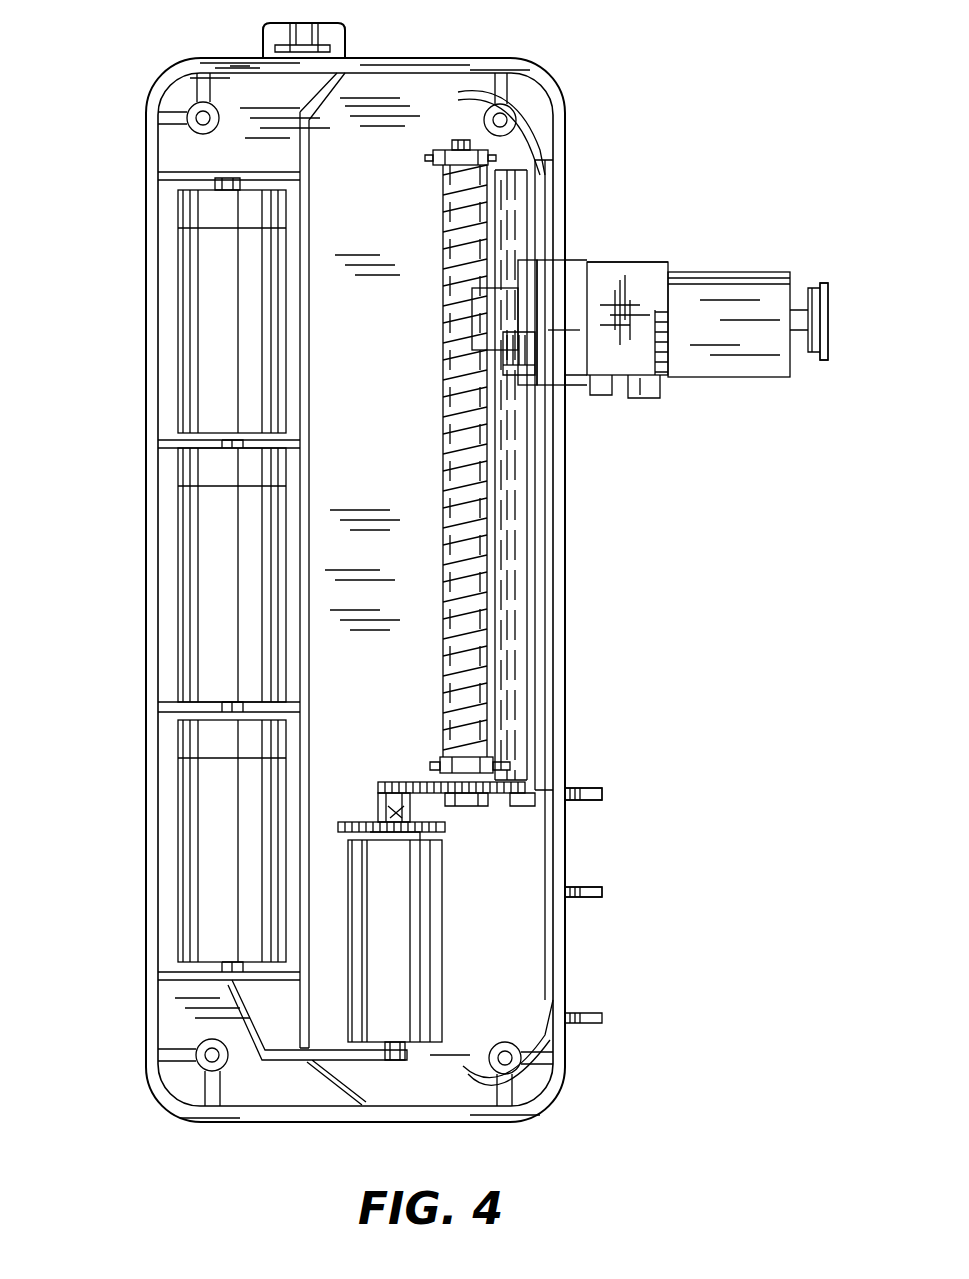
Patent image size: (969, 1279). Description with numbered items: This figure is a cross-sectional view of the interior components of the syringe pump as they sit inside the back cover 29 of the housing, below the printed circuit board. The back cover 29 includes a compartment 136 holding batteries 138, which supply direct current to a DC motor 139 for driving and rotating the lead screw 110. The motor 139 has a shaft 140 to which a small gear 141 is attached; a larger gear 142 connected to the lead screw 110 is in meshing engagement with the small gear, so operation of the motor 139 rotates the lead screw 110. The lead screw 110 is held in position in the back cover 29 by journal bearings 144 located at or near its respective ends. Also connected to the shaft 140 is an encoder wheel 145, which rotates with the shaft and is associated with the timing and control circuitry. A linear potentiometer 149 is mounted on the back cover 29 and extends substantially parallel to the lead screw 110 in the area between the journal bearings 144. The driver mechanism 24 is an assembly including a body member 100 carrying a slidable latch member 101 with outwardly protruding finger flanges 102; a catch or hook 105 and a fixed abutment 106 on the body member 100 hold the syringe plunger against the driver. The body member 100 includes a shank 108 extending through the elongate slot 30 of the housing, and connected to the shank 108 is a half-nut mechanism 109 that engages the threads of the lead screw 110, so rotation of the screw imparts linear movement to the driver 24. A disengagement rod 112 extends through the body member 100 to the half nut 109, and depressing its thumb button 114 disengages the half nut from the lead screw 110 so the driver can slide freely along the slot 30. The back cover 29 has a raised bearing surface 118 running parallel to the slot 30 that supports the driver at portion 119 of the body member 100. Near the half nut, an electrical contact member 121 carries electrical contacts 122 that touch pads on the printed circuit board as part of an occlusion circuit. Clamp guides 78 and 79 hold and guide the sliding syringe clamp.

The driver mechanism 24 is at (655, 262).
The back cover 29 is at (485, 60).
The elongate slot 30 is at (570, 605).
The clamp guide 78 is at (590, 900).
The clamp guide 79 is at (598, 790).
The body member 100 is at (705, 275).
The latch member 101 is at (625, 275).
The finger flanges 102 is at (662, 352).
The catch or hook 105 is at (635, 400).
The abutment 106 is at (605, 398).
The shank 108 is at (550, 325).
The half-nut mechanism 109 is at (470, 325).
The lead screw 110 is at (455, 460).
The disengagement rod 112 is at (815, 288).
The thumb button 114 is at (828, 355).
The raised bearing surface 118 is at (570, 665).
The portion of body member 119 is at (555, 265).
The electrical contact member 121 is at (510, 370).
The electrical contacts 122 is at (503, 348).
The compartment 136 is at (160, 675).
The batteries 138 is at (190, 487).
The DC motor 139 is at (440, 922).
The shaft 140 is at (380, 815).
The small gear 141 is at (388, 790).
The larger gear 142 is at (535, 800).
The journal bearings 144 is at (432, 160).
The encoder wheel 145 is at (440, 835).
The linear potentiometer 149 is at (470, 215).